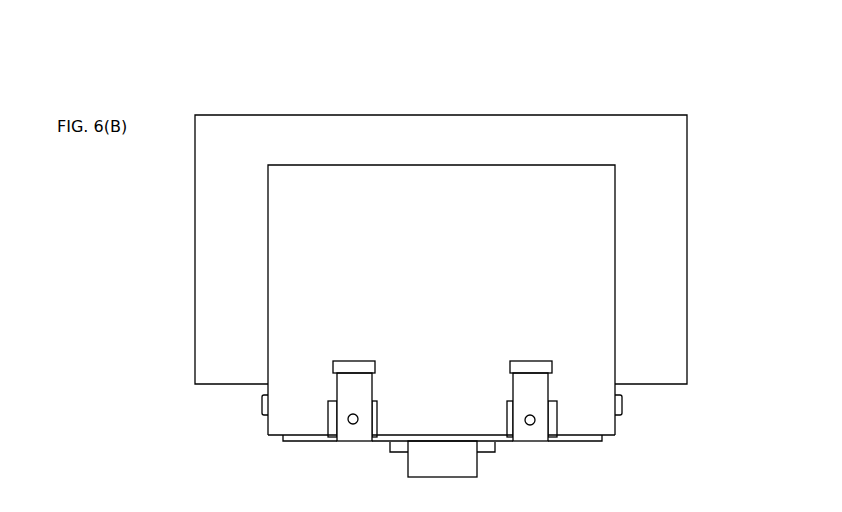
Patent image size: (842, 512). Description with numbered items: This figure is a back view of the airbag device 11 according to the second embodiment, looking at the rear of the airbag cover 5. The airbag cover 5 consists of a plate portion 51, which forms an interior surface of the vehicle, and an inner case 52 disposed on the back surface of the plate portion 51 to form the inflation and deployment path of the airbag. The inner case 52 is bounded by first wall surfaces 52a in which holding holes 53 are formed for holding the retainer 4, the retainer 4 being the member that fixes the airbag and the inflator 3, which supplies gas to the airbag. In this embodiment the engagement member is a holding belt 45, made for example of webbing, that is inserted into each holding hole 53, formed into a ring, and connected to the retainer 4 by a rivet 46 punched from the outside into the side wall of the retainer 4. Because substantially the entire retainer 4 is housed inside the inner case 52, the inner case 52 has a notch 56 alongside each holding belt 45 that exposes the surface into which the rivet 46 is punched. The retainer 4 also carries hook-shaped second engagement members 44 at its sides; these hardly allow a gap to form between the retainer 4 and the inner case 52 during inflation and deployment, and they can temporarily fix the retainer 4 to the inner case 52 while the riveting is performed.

The airbag device 11 is at (618, 92).
The airbag cover 5 is at (187, 213).
The plate portion 51 is at (443, 114).
The inner case 52 is at (265, 287).
The first wall surface 52a is at (461, 296).
The holding hole 53 is at (352, 360).
The holding belt 45 is at (375, 380).
The notch 56 is at (378, 415).
The rivet 46 is at (353, 428).
The second engagement member 44 is at (262, 407).
The retainer 4 is at (279, 446).
The inflator 3 is at (448, 473).